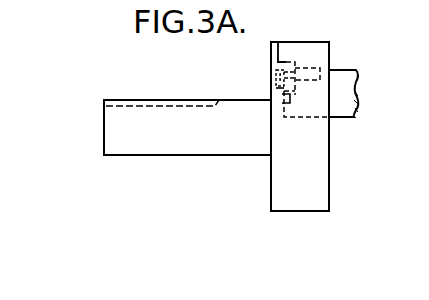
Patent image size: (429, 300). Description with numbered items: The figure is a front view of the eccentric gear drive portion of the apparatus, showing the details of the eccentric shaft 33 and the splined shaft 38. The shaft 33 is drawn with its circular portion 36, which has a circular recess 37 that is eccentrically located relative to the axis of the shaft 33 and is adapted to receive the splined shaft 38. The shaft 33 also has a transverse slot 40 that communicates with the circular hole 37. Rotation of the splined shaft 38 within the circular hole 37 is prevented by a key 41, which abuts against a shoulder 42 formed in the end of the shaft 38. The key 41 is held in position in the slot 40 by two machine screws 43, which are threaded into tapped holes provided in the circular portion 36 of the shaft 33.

The shaft 33 is at (165, 154).
The circular portion 36 is at (330, 180).
The circular recess 37 is at (320, 69).
The splined shaft 38 is at (340, 70).
The transverse slot 40 is at (283, 58).
The key 41 is at (276, 89).
The shoulder 42 is at (290, 96).
The machine screws 43 is at (277, 73).